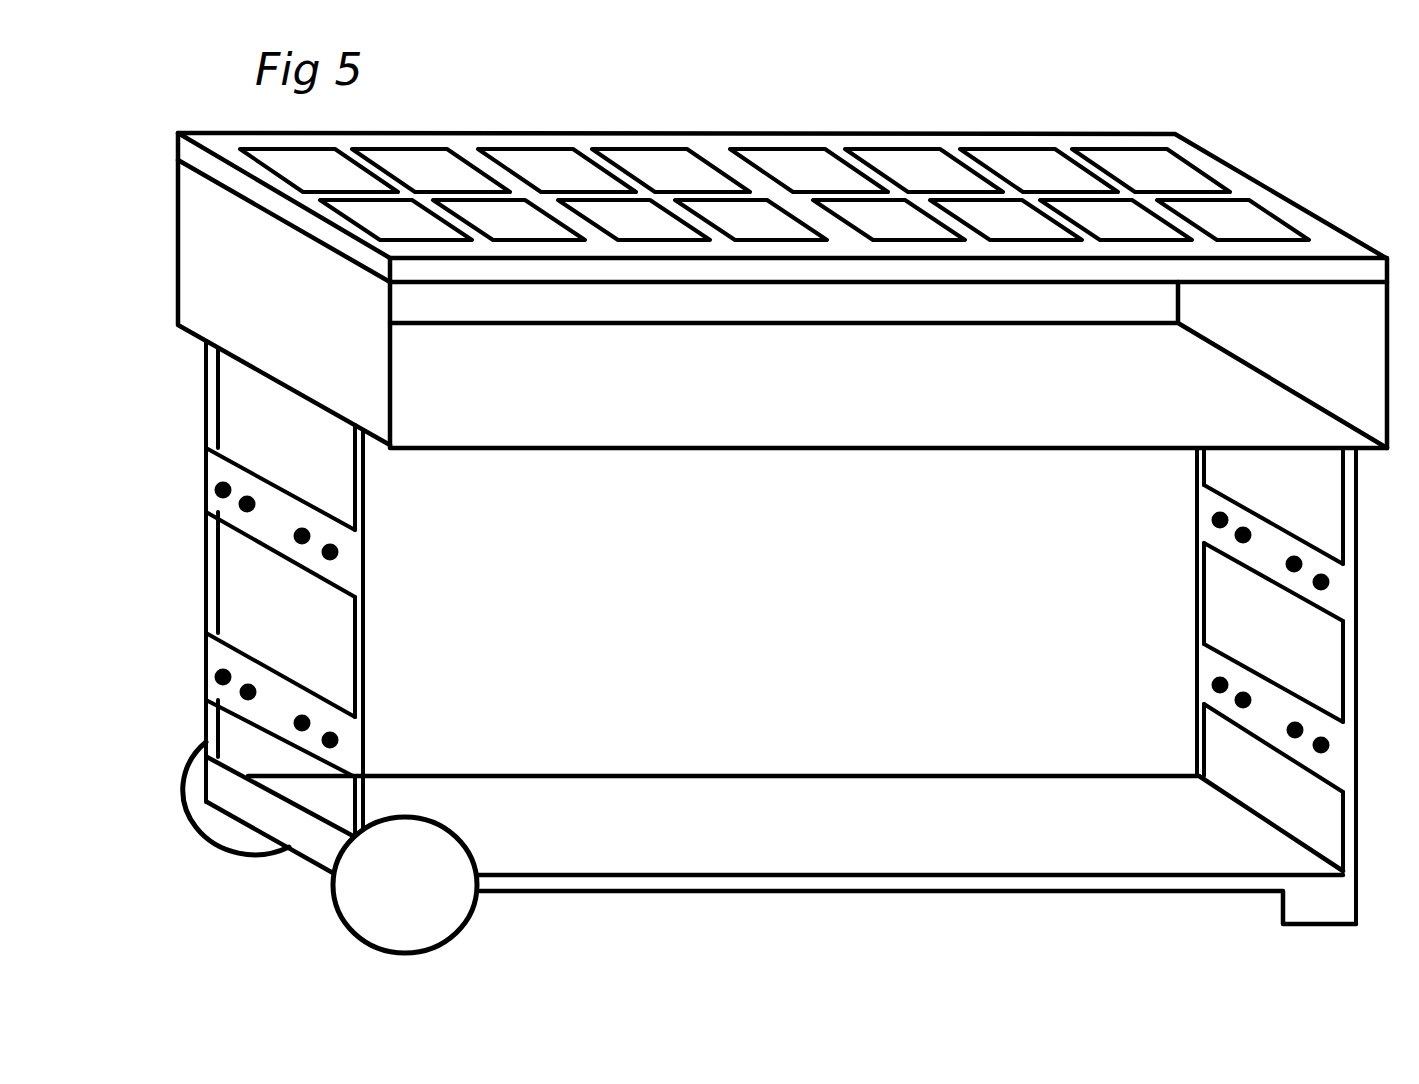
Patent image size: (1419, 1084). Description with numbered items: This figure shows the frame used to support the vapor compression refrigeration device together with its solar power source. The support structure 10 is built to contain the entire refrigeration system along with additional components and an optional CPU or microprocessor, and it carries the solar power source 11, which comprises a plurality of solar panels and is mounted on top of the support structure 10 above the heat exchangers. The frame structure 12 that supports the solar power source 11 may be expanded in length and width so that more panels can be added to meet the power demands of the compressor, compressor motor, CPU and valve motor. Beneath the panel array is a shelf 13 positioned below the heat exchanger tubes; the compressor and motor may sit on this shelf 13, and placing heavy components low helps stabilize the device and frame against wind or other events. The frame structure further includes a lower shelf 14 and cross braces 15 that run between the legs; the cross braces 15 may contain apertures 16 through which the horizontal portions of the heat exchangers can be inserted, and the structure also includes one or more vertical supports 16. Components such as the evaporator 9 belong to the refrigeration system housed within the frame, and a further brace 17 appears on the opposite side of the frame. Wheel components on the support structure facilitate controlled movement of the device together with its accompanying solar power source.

The evaporator 9 is at (226, 268).
The support structure 10 is at (837, 142).
The solar power source 11 is at (1030, 164).
The frame structure 12 is at (213, 167).
The shelf 13 is at (734, 432).
The lower shelf 14 is at (904, 803).
The cross braces 15 is at (278, 527).
The apertures 16 is at (214, 490).
The right cross brace 17 is at (1197, 516).